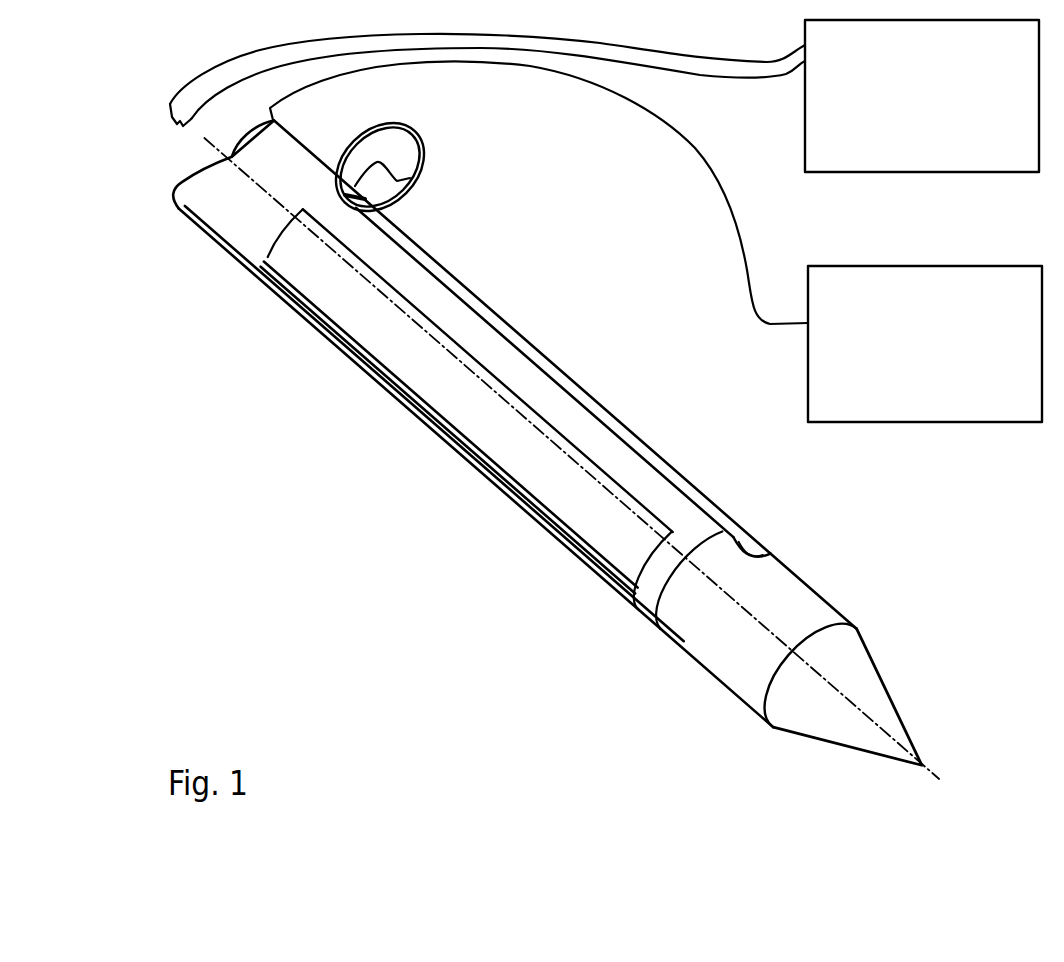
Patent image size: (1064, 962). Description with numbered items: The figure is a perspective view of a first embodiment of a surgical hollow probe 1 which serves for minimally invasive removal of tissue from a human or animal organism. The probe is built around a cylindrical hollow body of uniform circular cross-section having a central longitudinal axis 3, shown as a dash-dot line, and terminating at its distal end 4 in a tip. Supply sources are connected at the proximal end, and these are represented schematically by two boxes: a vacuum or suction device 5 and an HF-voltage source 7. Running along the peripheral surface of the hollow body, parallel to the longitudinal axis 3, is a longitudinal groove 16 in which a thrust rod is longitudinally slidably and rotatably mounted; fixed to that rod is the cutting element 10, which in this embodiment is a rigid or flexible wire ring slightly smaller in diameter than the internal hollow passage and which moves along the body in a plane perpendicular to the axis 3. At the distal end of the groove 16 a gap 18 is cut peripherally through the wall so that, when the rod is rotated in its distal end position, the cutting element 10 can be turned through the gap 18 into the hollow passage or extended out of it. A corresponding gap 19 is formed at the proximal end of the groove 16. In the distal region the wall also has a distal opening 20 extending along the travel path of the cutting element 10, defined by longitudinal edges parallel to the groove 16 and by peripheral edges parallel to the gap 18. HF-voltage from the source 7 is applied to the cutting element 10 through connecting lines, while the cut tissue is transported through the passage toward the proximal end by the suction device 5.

The hollow probe 1 is at (606, 228).
The central longitudinal axis 3 is at (757, 621).
The distal end 4 is at (898, 686).
The vacuum or suction device 5 is at (918, 102).
The HF-voltage source 7 is at (923, 357).
The cutting element 10 is at (424, 132).
The longitudinal groove 16 is at (568, 393).
The gap 18 is at (761, 551).
The gap 19 is at (408, 178).
The distal opening 20 is at (502, 445).